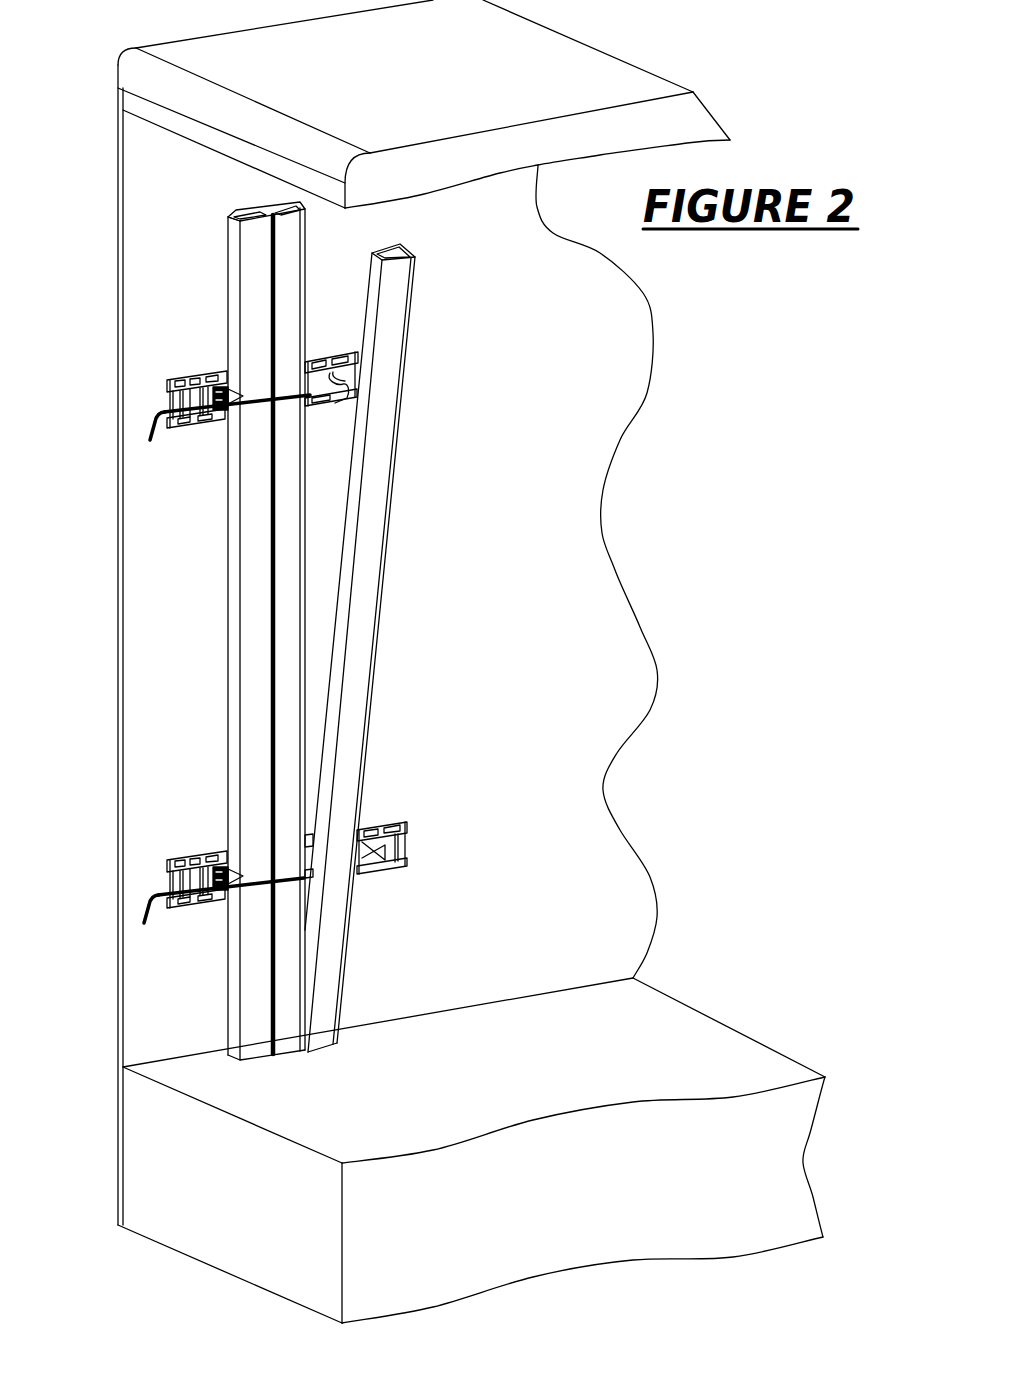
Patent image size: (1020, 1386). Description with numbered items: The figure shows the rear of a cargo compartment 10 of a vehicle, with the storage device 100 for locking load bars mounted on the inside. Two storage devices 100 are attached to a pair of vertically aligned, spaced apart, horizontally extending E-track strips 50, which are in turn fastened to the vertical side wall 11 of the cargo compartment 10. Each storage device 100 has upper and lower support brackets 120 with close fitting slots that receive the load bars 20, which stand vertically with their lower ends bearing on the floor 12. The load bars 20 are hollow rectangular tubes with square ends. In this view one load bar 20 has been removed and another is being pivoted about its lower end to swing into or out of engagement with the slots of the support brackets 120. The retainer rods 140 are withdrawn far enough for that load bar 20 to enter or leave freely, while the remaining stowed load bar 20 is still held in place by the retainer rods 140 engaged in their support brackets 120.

The cargo compartment 10 is at (341, 645).
The vertical side wall 11 is at (391, 105).
The floor 12 is at (443, 1150).
The load bar 20 is at (289, 631).
The E-track strip 50 is at (229, 604).
The storage device 100 is at (150, 688).
The support bracket 120 is at (406, 358).
The retainer rod 140 is at (169, 649).